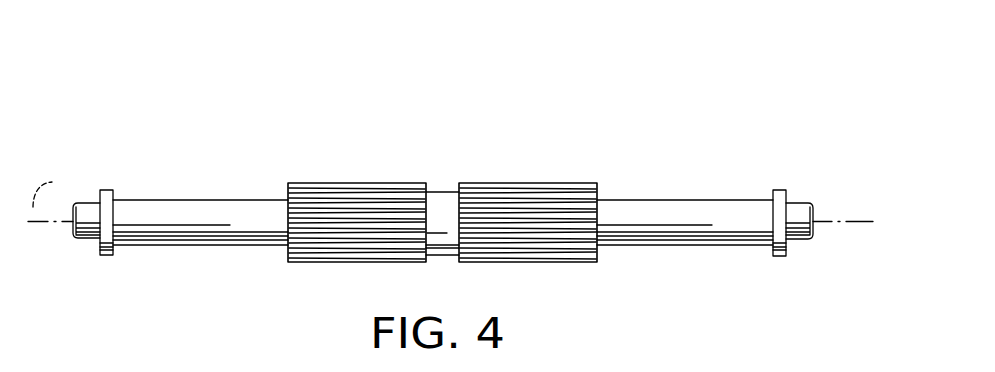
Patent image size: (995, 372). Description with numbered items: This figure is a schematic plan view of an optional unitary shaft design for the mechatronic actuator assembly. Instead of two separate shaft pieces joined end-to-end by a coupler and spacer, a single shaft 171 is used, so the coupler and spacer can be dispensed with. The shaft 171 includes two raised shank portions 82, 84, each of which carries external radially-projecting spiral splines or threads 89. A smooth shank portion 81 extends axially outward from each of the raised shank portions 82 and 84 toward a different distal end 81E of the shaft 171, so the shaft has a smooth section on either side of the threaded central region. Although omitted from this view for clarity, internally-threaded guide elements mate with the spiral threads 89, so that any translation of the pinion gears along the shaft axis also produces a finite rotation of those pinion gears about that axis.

The single shaft 171 is at (450, 203).
The smooth shank portion 81 is at (202, 200).
The distal end 81E is at (83, 240).
The raised shank portion 82 is at (353, 267).
The raised shank portion 84 is at (527, 268).
The spiral splines or threads 89 is at (500, 192).